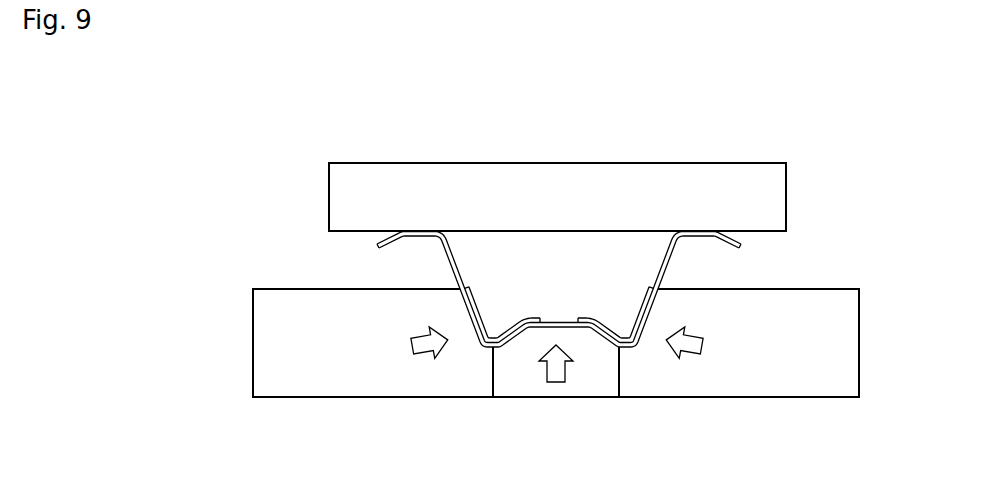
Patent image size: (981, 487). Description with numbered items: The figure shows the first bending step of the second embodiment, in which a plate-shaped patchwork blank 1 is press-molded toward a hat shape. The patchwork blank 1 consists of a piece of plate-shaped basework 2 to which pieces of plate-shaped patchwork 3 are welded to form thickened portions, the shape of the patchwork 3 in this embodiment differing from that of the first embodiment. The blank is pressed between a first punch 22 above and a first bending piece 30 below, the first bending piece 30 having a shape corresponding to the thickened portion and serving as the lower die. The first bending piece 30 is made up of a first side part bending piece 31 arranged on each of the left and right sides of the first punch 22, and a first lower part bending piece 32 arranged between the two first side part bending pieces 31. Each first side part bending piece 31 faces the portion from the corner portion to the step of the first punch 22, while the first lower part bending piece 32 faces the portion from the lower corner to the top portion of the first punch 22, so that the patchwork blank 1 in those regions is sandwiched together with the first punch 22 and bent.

The patchwork blank 1 is at (857, 153).
The basework 2 is at (730, 234).
The patchwork 3 is at (646, 302).
The first punch 22 is at (334, 193).
The first bending piece 30 is at (538, 343).
The first side part bending piece 31 is at (255, 365).
The first lower part bending piece 32 is at (548, 393).